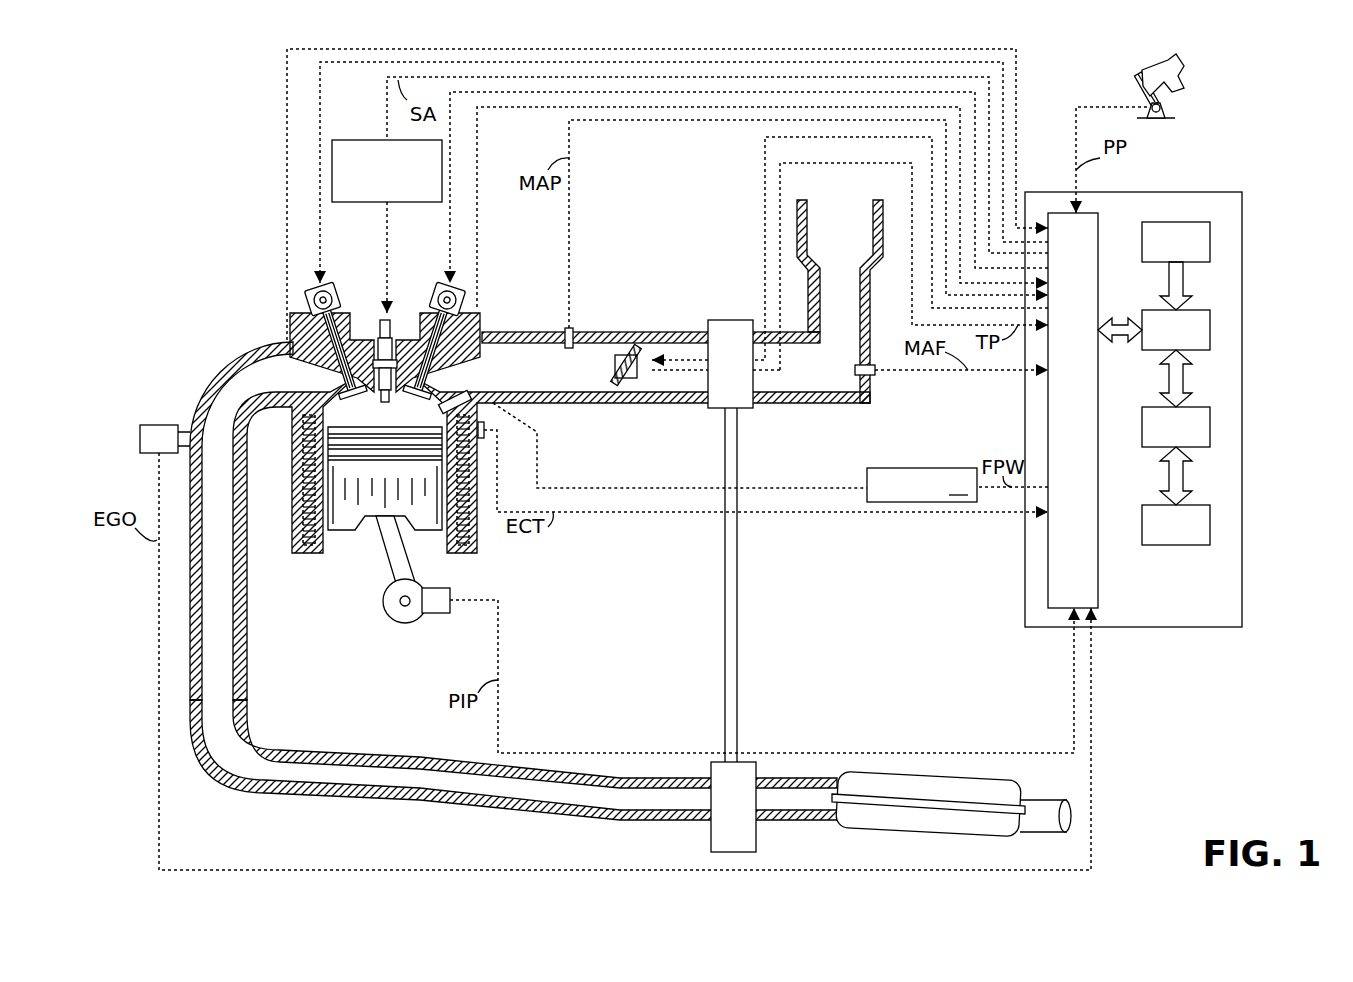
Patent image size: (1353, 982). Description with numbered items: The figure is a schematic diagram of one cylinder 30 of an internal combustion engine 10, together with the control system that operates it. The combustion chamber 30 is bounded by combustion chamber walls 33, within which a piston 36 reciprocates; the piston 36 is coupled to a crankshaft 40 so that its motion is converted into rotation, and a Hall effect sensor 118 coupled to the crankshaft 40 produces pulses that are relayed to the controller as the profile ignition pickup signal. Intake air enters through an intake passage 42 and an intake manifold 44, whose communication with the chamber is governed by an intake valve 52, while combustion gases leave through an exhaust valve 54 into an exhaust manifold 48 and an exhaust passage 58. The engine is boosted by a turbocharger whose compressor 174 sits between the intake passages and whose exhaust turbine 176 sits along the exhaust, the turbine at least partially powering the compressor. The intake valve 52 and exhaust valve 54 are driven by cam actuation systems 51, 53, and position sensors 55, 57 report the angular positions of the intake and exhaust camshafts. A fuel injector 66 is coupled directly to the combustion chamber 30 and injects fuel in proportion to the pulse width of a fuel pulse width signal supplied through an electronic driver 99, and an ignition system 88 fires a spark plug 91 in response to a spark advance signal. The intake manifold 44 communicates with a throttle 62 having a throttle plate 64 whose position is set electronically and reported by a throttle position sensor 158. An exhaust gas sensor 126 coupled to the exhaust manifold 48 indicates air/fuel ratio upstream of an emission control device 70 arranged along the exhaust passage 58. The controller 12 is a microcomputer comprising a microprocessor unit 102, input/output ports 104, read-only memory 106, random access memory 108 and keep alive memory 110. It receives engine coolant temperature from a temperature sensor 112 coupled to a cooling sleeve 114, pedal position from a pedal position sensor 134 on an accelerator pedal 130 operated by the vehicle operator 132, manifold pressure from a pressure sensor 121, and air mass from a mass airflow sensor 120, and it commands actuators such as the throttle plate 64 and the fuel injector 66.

The internal combustion engine 10 is at (176, 177).
The controller 12 is at (1242, 192).
The cylinder 30 is at (312, 497).
The combustion chamber walls 33 is at (322, 545).
The piston 36 is at (370, 505).
The crankshaft 40 is at (390, 618).
The intake passage 42 is at (828, 252).
The intake manifold 44 is at (516, 382).
The exhaust manifold 48 is at (248, 386).
The intake cam actuation system 51 is at (440, 285).
The intake valve 52 is at (425, 380).
The exhaust cam actuation system 53 is at (330, 282).
The exhaust valve 54 is at (330, 375).
The intake camshaft position sensor 55 is at (458, 302).
The exhaust camshaft position sensor 57 is at (305, 305).
The exhaust passage 58 is at (470, 808).
The throttle 62 is at (632, 350).
The throttle plate 64 is at (626, 348).
The fuel injector 66 is at (483, 405).
The emission control device 70 is at (890, 830).
The ignition system 88 is at (344, 140).
The spark plug 91 is at (390, 318).
The electronic driver 99 is at (922, 485).
The microprocessor unit 102 is at (1210, 330).
The input/output ports 104 is at (1099, 222).
The read-only memory 106 is at (1210, 238).
The random access memory 108 is at (1210, 425).
The keep alive memory 110 is at (1210, 522).
The temperature sensor 112 is at (484, 430).
The cooling sleeve 114 is at (472, 552).
The Hall effect sensor 118 is at (435, 613).
The mass airflow sensor 120 is at (868, 376).
The pressure sensor 121 is at (572, 328).
The exhaust gas sensor 126 is at (158, 424).
The accelerator pedal 130 is at (1135, 85).
The vehicle operator 132 is at (1185, 72).
The pedal position sensor 134 is at (1166, 108).
The throttle position sensor 158 is at (781, 358).
The compressor 174 is at (716, 371).
The exhaust turbine 176 is at (719, 812).